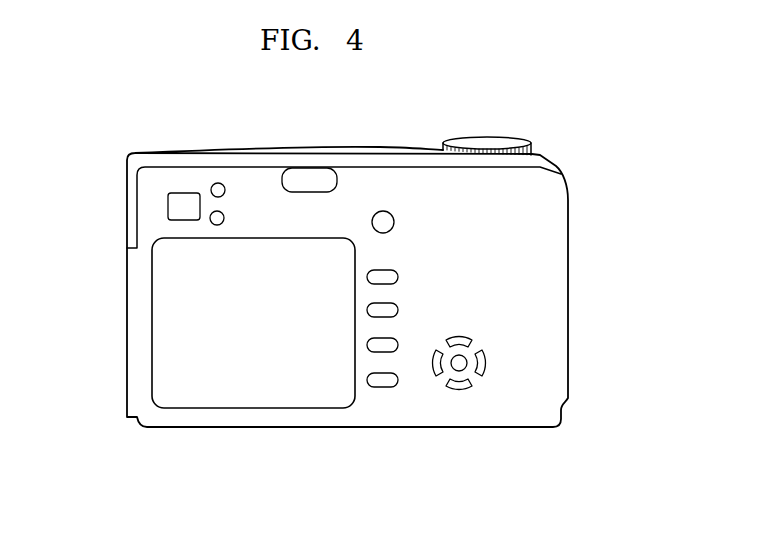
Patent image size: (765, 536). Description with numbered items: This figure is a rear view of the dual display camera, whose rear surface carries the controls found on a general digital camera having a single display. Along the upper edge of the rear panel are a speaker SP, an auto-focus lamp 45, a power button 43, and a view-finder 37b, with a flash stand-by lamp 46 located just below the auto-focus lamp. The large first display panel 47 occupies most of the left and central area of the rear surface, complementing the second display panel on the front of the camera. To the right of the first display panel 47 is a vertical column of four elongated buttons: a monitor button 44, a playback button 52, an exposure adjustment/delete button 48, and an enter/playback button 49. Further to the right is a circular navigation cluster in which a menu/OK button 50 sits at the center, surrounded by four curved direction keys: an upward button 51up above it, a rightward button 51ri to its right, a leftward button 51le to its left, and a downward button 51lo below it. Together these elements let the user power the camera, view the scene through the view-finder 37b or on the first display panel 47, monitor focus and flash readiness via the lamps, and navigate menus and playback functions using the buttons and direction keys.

The speaker SP is at (309, 177).
The auto-focus lamp 45 is at (225, 186).
The power button 43 is at (384, 218).
The view-finder 37b is at (183, 208).
The flash stand-by lamp 46 is at (211, 222).
The first display panel 47 is at (252, 373).
The monitor button 44 is at (398, 277).
The playback button 52 is at (398, 310).
The exposure adjustment/delete button 48 is at (377, 347).
The enter/playback button 49 is at (383, 386).
The menu/OK button 50 is at (459, 363).
The upward button 51up is at (470, 340).
The rightward button 51ri is at (484, 362).
The leftward button 51le is at (432, 373).
The downward button 51lo is at (460, 388).